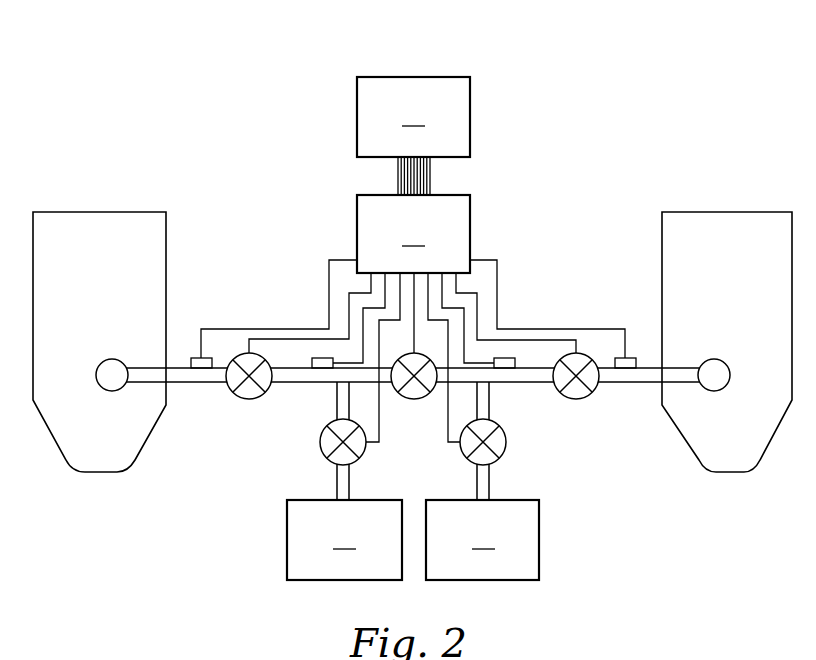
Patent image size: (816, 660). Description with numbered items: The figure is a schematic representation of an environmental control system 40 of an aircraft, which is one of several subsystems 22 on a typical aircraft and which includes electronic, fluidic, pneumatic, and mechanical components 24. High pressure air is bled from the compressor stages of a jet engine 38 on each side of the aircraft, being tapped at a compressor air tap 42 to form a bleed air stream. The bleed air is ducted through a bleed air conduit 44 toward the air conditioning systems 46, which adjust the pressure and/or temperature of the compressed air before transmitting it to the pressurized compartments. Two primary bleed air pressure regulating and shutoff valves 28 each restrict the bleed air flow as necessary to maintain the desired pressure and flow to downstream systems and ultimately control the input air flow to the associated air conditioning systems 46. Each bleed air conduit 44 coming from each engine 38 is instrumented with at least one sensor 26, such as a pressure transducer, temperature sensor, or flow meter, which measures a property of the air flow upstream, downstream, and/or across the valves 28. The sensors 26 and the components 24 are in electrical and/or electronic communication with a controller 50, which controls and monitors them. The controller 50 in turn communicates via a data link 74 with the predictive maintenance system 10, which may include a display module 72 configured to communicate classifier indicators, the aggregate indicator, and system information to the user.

The predictive maintenance system 10 is at (357, 103).
The subsystem 22 is at (162, 53).
The component 24 is at (418, 388).
The sensor 26 is at (192, 357).
The primary bleed air pressure regulating and shutoff valve 28 is at (233, 391).
The jet engine 38 is at (80, 211).
The environmental control system 40 is at (166, 95).
The compressor air tap 42 is at (107, 392).
The bleed air conduit 44 is at (190, 384).
The air conditioning system 46 is at (413, 540).
The controller 50 is at (413, 234).
The display module 72 is at (395, 105).
The data link 74 is at (396, 181).